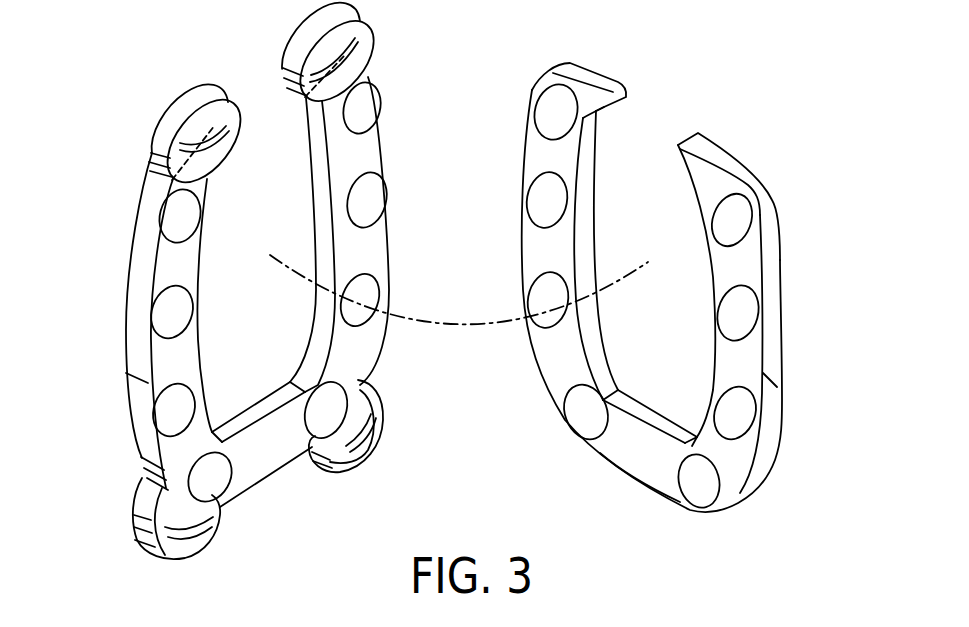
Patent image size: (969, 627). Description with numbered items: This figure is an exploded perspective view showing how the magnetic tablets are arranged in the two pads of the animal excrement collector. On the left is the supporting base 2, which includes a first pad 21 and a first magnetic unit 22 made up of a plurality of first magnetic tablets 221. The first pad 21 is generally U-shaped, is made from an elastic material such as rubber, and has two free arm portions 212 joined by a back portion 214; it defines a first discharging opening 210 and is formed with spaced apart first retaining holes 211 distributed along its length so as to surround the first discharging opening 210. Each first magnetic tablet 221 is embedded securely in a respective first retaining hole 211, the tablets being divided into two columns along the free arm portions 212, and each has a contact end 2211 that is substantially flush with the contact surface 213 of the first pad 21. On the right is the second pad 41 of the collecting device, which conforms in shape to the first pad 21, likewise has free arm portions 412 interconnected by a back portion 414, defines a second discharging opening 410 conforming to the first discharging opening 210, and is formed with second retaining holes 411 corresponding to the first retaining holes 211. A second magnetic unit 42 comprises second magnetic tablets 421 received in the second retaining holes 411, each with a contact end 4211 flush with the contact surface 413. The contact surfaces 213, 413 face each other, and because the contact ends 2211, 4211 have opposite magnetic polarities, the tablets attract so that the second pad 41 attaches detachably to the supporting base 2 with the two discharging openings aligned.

The supporting base 2 is at (142, 90).
The first pad 21 is at (125, 250).
The first magnetic unit 22 is at (360, 113).
The first discharging opening 210 is at (272, 332).
The first retaining holes 211 is at (368, 217).
The free arm portions 212 is at (133, 317).
The contact surface 213 is at (165, 355).
The back portion 214 is at (265, 453).
The first magnetic tablets 221 is at (373, 190).
The contact end 2211 is at (168, 415).
The second pad 41 is at (778, 458).
The second magnetic unit 42 is at (732, 225).
The second discharging opening 410 is at (672, 383).
The second retaining holes 411 is at (762, 347).
The free arm portions 412 is at (525, 150).
The contact surface 413 is at (748, 371).
The back portion 414 is at (640, 480).
The second magnetic tablets 421 is at (738, 315).
The contact end 4211 is at (738, 412).